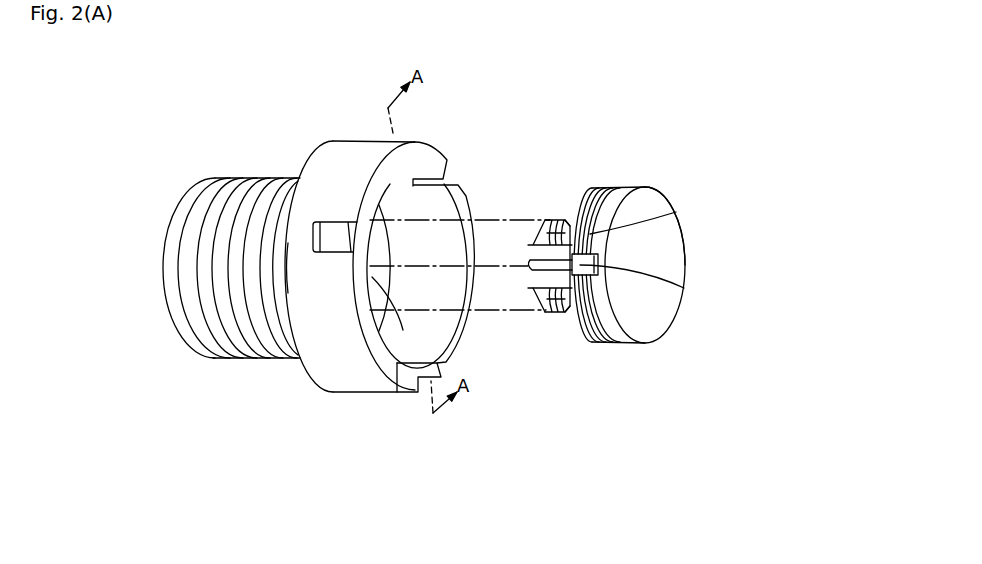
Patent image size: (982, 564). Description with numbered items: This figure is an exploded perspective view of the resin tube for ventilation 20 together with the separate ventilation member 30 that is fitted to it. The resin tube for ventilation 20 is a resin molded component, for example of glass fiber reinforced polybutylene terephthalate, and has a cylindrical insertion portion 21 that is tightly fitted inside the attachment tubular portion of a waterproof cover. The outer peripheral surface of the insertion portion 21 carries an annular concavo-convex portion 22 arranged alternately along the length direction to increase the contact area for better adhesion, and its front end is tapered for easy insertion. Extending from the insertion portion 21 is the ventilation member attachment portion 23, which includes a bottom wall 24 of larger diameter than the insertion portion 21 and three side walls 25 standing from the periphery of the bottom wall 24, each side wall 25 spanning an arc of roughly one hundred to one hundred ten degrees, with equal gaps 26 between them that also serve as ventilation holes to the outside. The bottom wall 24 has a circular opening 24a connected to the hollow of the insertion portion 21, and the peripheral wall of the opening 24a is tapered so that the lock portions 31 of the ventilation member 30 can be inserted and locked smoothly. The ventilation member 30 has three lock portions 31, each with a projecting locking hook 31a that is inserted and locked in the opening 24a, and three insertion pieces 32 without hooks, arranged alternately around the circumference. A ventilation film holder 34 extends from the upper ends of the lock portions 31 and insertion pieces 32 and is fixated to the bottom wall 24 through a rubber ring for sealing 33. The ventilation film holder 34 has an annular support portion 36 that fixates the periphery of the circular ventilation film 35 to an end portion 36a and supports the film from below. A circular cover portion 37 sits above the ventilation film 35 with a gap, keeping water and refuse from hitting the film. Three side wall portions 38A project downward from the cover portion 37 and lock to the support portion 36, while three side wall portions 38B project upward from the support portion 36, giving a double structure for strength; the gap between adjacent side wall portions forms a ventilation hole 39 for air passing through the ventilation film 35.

The resin tube for ventilation 20 is at (270, 133).
The insertion portion 21 is at (247, 365).
The annular concavo-convex portion 22 is at (211, 299).
The ventilation member attachment portion 23 is at (373, 396).
The bottom wall 24 is at (407, 237).
The opening 24a is at (398, 394).
The side wall 25 is at (335, 167).
The gap 26 is at (332, 220).
The ventilation member 30 is at (662, 172).
The lock portion 31 is at (548, 219).
The locking hook 31a is at (543, 308).
The insertion piece 32 is at (529, 262).
The rubber ring for sealing 33 is at (568, 313).
The ventilation film holder 34 is at (684, 315).
The ventilation film 35 is at (601, 333).
The support portion 36 is at (604, 189).
The end portion 36a is at (593, 189).
The cover portion 37 is at (665, 240).
The side wall portion 38A is at (684, 289).
The side wall portion 38B is at (676, 214).
The ventilation hole 39 is at (589, 327).